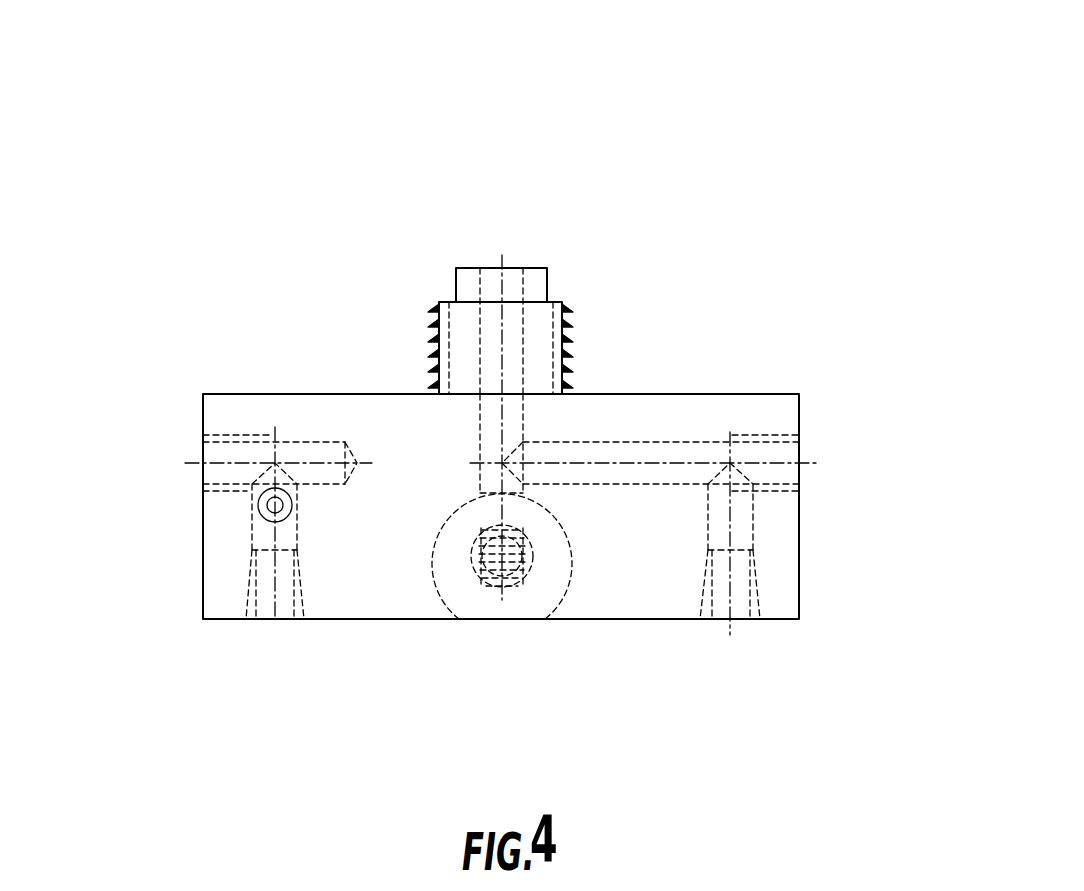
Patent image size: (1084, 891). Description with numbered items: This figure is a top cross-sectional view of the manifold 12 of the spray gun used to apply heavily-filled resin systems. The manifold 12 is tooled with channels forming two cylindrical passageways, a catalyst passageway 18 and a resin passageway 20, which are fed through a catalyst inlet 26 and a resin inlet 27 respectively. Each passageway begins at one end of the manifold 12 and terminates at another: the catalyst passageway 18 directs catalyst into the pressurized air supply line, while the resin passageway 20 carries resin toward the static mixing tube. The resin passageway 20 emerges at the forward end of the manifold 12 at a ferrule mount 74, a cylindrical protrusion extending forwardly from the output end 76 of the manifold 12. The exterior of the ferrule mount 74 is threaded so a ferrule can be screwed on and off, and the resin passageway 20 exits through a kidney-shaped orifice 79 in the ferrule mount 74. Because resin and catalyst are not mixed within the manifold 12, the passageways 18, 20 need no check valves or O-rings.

The manifold 12 is at (286, 361).
The output end 76 is at (483, 250).
The kidney-shaped orifice 79 is at (512, 270).
The ferrule mount 74 is at (573, 348).
The catalyst passageway 18 is at (267, 572).
The resin passageway 20 is at (722, 540).
The catalyst inlet 26 is at (292, 607).
The resin inlet 27 is at (740, 593).